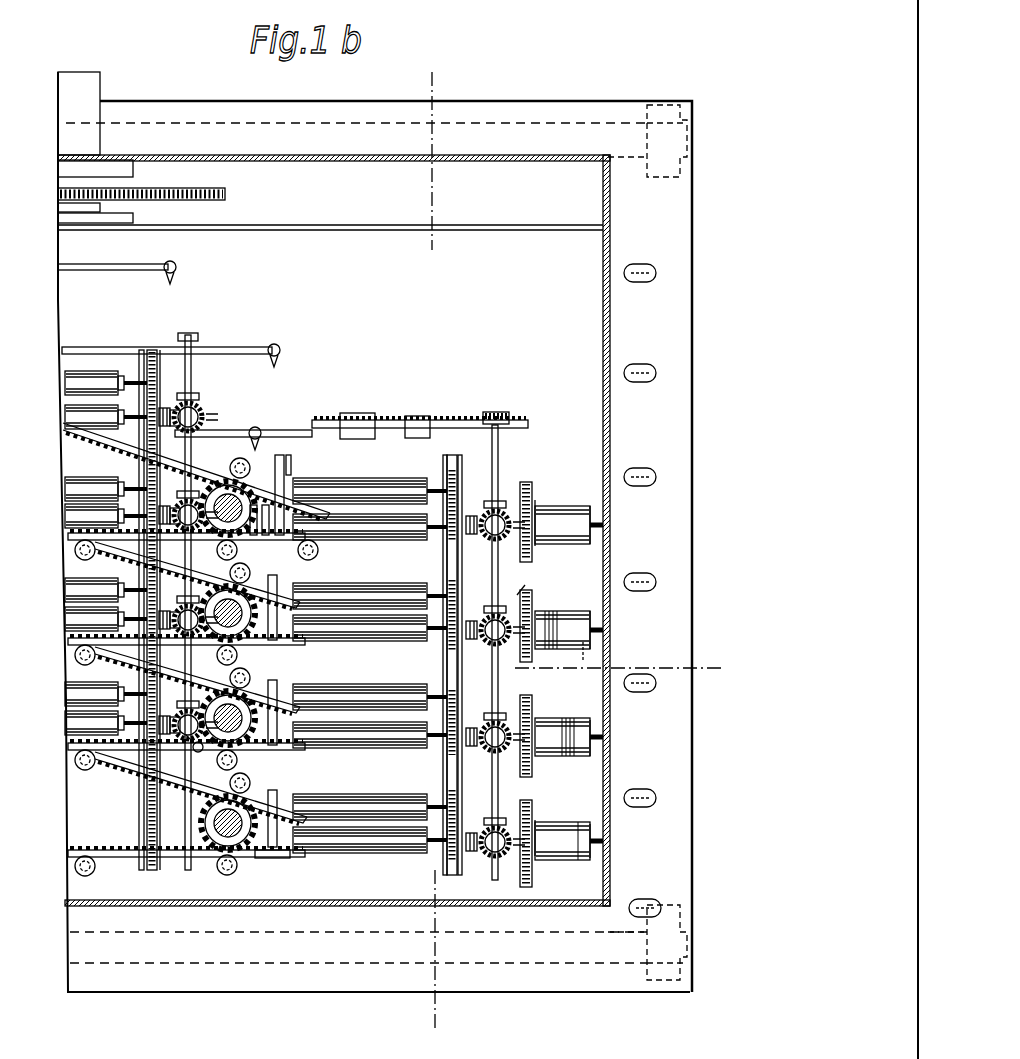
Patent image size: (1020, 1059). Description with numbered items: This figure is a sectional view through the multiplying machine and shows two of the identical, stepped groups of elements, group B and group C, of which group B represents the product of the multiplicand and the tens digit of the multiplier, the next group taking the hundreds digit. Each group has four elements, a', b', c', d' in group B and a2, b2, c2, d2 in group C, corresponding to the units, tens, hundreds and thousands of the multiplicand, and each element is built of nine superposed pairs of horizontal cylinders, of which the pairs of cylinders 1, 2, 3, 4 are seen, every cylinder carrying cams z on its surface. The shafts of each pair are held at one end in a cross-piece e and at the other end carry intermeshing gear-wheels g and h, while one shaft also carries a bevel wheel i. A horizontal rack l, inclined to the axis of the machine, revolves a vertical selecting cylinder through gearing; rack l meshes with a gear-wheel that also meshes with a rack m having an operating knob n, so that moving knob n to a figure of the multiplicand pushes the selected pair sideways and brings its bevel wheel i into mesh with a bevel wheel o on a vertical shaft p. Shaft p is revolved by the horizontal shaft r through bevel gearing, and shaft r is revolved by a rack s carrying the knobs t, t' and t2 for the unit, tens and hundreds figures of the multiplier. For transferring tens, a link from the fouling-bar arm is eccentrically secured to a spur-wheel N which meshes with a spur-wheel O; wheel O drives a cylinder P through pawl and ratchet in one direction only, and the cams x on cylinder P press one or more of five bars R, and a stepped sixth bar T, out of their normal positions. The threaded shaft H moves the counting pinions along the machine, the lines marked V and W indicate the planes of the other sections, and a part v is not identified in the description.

The group C is at (375, 532).
The screw-threaded shaft H is at (334, 545).
The cam z is at (433, 144).
The section line U— V is at (622, 658).
The section line Z— W is at (436, 964).
The rack s is at (100, 83).
The unit operating knob t is at (126, 261).
The tens operating knob t' is at (184, 349).
The hundreds operating knob t2 is at (258, 428).
The horizontal shaft r is at (507, 452).
The bevel gear v is at (206, 420).
The bevel wheel i is at (178, 408).
The pair of cylinders 1 is at (106, 400).
The pair of cylinders 2 is at (106, 502).
The pair of cylinders 3 is at (106, 604).
The pair of cylinders 4 is at (253, 753).
The units element a' is at (184, 465).
The tens element b' is at (170, 562).
The hundreds element c' is at (169, 668).
The thousands element d' is at (171, 774).
The group B is at (186, 845).
The gear-wheel h is at (152, 408).
The horizontal rack l is at (207, 624).
The operating knob n is at (220, 716).
The rack m is at (284, 675).
The cross-piece e is at (268, 542).
The vertical shaft p is at (171, 773).
The units element a2 is at (370, 525).
The tens element b2 is at (370, 630).
The hundreds element c2 is at (370, 734).
The thousands element d2 is at (370, 843).
The gear-wheel g is at (148, 395).
The bevel wheel o is at (518, 678).
The spur-wheel O is at (533, 689).
The cam x is at (540, 508).
The spur-wheel N is at (524, 675).
The tens-transfer bar R is at (565, 702).
The cylinder P is at (536, 737).
The sixth bar T is at (585, 777).